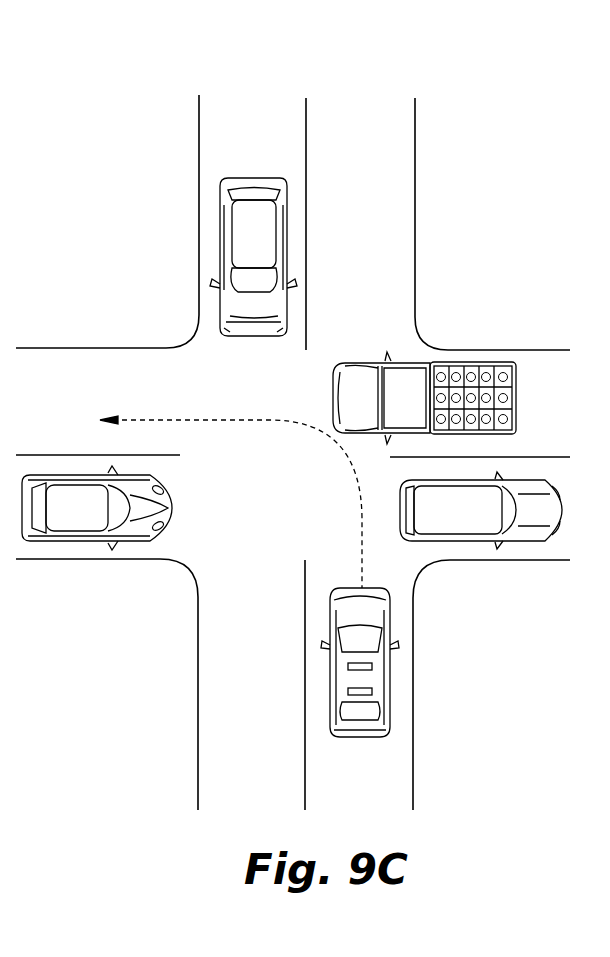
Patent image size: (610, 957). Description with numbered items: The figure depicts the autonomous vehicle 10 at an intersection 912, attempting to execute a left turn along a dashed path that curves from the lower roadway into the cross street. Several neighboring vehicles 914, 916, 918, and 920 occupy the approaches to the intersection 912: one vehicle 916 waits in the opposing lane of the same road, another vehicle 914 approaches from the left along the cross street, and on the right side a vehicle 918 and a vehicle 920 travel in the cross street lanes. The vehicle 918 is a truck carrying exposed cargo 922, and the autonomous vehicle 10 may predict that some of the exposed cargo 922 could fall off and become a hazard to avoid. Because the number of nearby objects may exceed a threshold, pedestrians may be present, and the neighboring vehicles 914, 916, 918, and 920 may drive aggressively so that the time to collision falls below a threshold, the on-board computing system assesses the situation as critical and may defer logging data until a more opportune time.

The autonomous vehicle 10 is at (362, 738).
The intersection 912 is at (278, 407).
The neighboring vehicle 914 is at (163, 490).
The neighboring vehicle 916 is at (219, 233).
The vehicle 918 is at (384, 361).
The neighboring vehicle 920 is at (512, 545).
The exposed cargo 922 is at (442, 364).